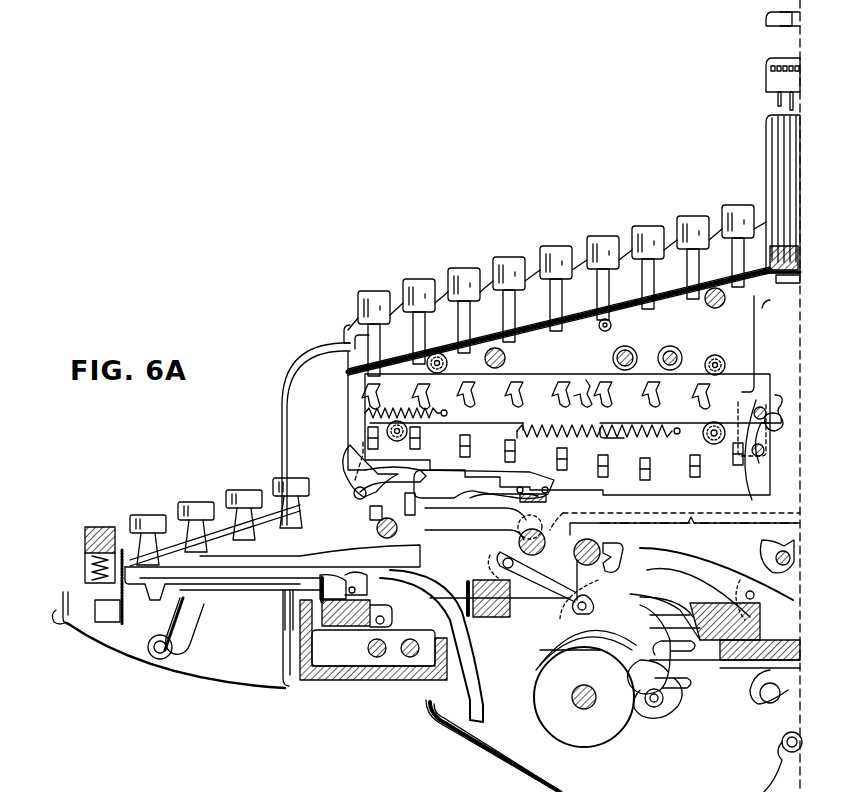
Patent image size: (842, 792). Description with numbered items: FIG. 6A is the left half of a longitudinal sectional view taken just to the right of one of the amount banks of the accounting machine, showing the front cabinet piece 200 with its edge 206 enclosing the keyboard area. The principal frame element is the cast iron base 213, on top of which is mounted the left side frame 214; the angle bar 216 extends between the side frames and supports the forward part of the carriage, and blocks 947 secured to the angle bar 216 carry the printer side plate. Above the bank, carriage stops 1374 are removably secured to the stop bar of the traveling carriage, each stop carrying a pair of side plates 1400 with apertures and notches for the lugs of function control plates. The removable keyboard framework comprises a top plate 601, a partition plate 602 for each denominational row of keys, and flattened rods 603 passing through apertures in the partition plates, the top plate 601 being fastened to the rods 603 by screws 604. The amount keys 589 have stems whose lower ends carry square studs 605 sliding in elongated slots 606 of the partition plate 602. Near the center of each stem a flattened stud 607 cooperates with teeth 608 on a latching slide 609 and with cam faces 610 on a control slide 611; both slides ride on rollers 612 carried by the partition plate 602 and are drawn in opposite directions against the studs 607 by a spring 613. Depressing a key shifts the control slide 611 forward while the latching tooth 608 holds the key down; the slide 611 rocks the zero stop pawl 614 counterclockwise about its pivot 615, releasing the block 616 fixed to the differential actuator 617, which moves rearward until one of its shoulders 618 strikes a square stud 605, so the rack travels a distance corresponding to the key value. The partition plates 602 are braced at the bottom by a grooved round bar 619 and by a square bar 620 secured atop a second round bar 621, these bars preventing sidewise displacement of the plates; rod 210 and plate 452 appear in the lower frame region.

The side plates 1400 is at (776, 50).
The carriage stops 1374 is at (767, 56).
The key 589 is at (478, 274).
The left side frame 214 is at (348, 526).
The front piece 200 is at (286, 367).
The cover edge 206 is at (342, 328).
The top plate 601 is at (355, 366).
The partition plate 602 is at (347, 390).
The cam faces 610 is at (466, 392).
The stud 607 is at (659, 384).
The teeth 608 is at (524, 429).
The latching slide 609 is at (558, 442).
The spring 613 is at (608, 433).
The control slide 611 is at (470, 438).
The square studs 605 is at (688, 489).
The elongated slots 606 is at (640, 464).
The flattened rods 603 is at (502, 366).
The screws 604 is at (482, 336).
The rollers 612 is at (440, 340).
The blocks 947 is at (764, 337).
The angle bar 216 is at (798, 280).
The zero stop pawl 614 is at (338, 438).
The pivot 615 is at (351, 486).
The block 616 is at (428, 501).
The square bar 620 is at (520, 500).
The shoulders 618 is at (546, 498).
The round bar 619 is at (373, 525).
The base plate 452 is at (428, 540).
The differential actuator 617 is at (633, 526).
The round bar 621 is at (532, 555).
The rod 210 is at (510, 778).
The cast iron base 213 is at (354, 684).